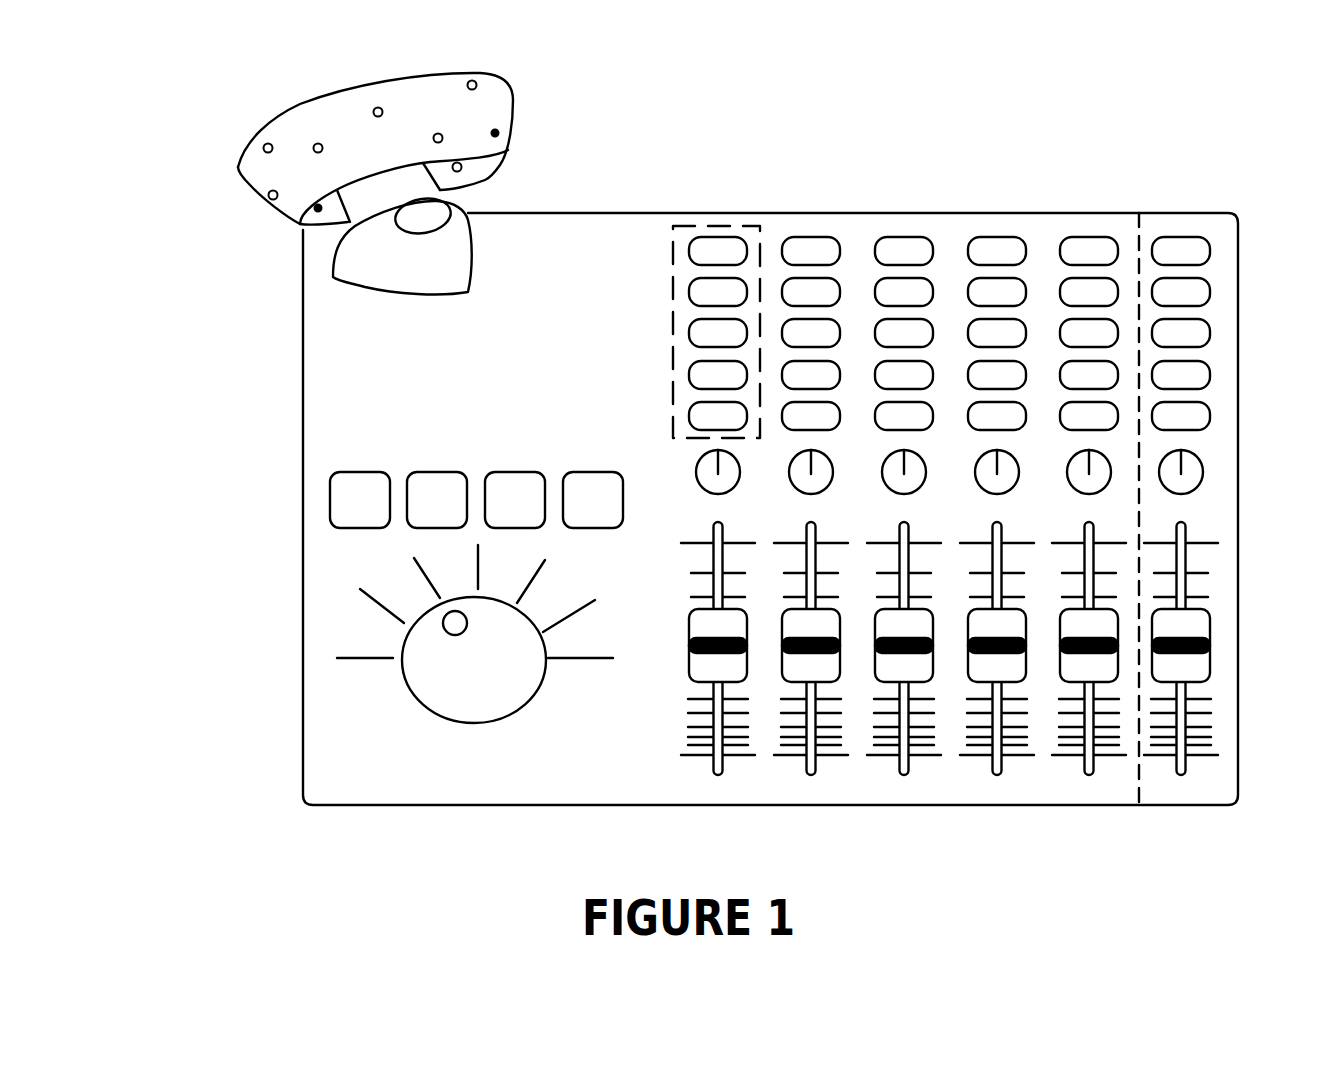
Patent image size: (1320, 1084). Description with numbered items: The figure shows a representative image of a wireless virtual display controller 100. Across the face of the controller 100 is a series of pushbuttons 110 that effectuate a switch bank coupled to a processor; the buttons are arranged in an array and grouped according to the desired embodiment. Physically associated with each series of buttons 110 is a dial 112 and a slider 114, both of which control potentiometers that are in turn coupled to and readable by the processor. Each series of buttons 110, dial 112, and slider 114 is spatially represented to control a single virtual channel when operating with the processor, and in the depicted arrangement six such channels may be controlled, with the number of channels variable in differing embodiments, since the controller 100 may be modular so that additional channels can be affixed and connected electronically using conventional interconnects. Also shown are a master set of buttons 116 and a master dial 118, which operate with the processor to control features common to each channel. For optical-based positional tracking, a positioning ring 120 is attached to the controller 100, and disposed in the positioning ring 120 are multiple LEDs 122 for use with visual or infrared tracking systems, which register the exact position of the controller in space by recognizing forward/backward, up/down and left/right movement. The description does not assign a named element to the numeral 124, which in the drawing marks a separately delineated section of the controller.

The wireless virtual display controller 100 is at (913, 153).
The series of pushbuttons 110 is at (722, 232).
The dial 112 is at (700, 470).
The slider 114 is at (705, 673).
The master set of buttons 116 is at (355, 500).
The master dial 118 is at (420, 677).
The positioning ring 120 is at (490, 102).
The LEDs 122 is at (275, 200).
The master channel section 124 is at (1187, 790).